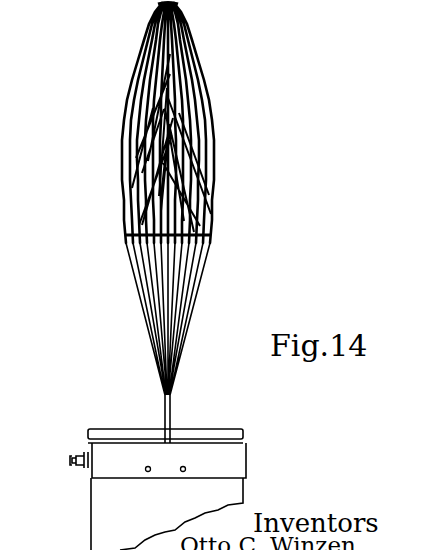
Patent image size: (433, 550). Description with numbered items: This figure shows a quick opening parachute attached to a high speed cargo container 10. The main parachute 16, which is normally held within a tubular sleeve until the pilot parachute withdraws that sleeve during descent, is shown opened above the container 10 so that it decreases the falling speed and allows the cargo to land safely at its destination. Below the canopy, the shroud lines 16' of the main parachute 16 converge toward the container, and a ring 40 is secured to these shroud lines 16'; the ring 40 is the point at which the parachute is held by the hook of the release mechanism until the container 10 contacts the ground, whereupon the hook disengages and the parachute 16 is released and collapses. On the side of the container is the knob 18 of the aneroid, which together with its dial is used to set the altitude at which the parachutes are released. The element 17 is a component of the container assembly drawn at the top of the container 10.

The cargo container 10 is at (105, 520).
The main parachute 16 is at (195, 123).
The shroud lines 16' is at (185, 319).
The cover 17 is at (246, 455).
The knob 18 is at (70, 458).
The ring 40 is at (171, 409).